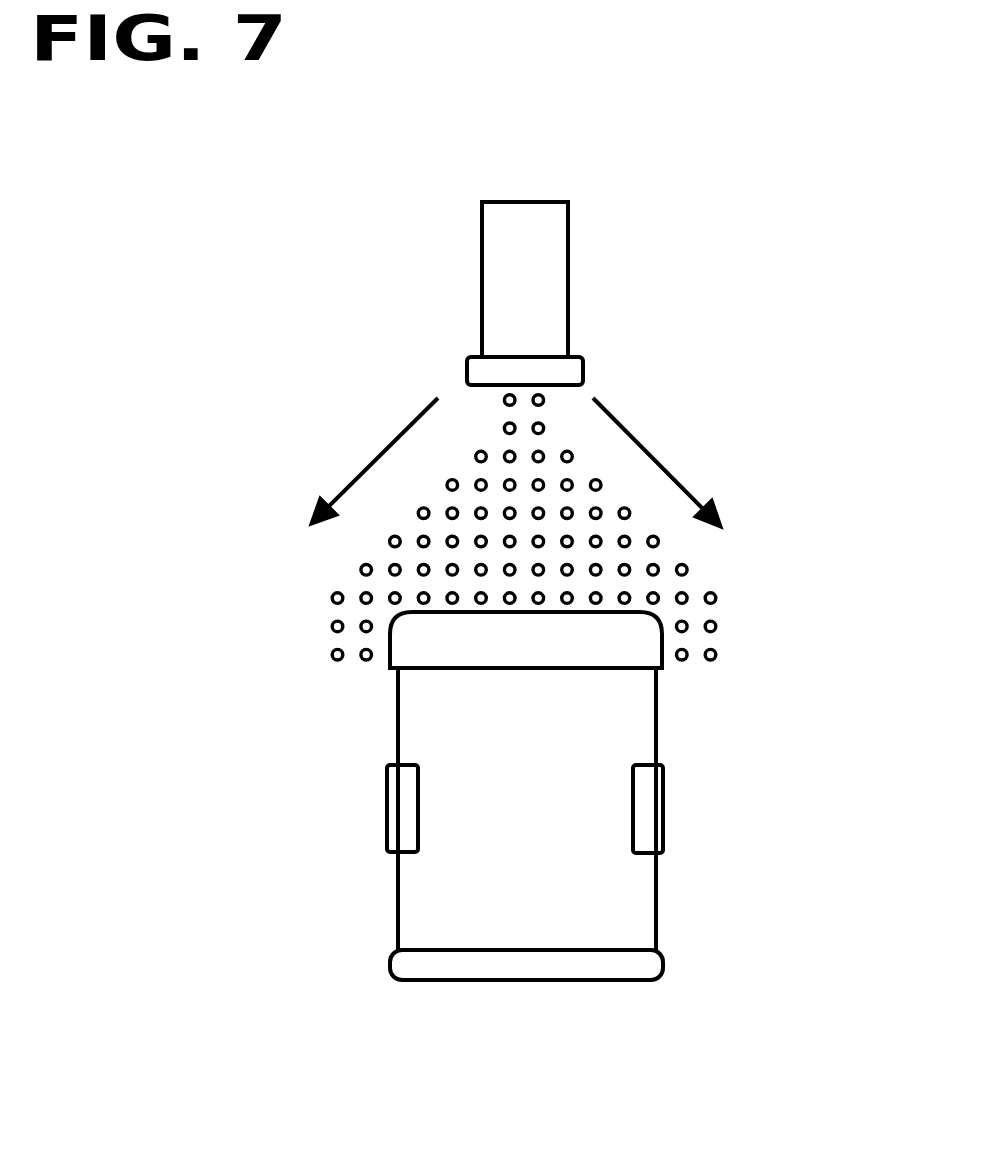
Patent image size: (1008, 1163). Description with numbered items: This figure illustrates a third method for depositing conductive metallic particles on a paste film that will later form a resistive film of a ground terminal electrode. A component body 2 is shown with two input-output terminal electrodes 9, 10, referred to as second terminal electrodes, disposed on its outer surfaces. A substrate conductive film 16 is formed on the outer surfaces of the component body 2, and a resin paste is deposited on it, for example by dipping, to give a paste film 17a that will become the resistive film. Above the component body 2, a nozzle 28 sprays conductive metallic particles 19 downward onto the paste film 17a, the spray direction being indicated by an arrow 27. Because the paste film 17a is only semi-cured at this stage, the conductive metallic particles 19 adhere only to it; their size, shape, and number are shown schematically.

The component body 2 is at (637, 903).
The input-output terminal electrode 9 is at (397, 803).
The input-output terminal electrode 10 is at (660, 807).
The substrate conductive film 16 is at (483, 967).
The paste film 17a is at (630, 647).
The conductive metallic particles 19 is at (331, 598).
The arrow 27 is at (655, 458).
The nozzle 28 is at (553, 296).